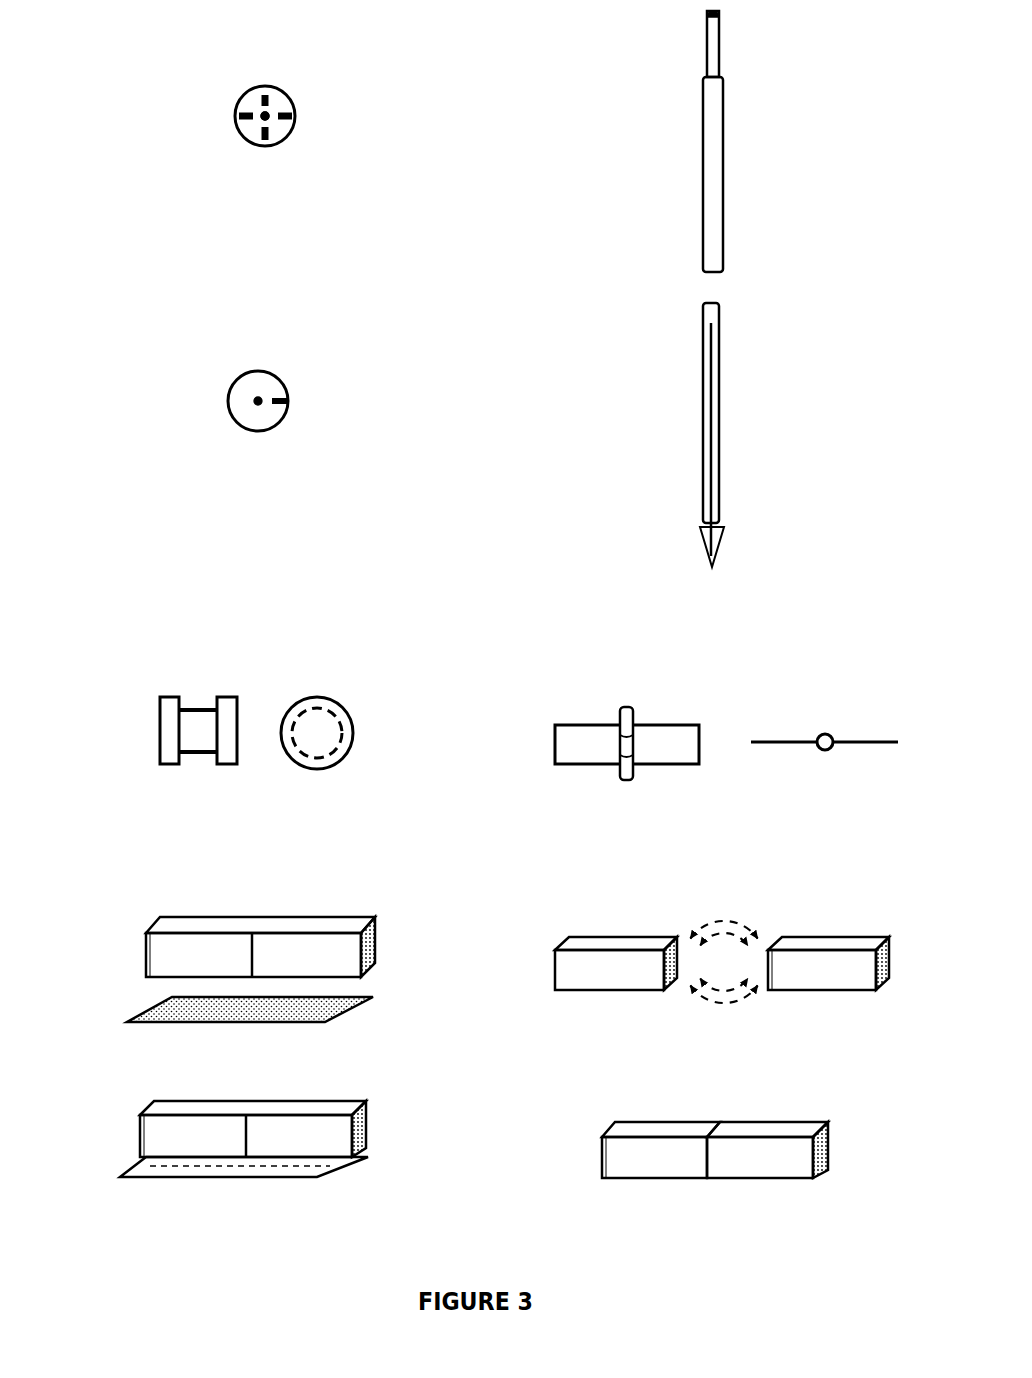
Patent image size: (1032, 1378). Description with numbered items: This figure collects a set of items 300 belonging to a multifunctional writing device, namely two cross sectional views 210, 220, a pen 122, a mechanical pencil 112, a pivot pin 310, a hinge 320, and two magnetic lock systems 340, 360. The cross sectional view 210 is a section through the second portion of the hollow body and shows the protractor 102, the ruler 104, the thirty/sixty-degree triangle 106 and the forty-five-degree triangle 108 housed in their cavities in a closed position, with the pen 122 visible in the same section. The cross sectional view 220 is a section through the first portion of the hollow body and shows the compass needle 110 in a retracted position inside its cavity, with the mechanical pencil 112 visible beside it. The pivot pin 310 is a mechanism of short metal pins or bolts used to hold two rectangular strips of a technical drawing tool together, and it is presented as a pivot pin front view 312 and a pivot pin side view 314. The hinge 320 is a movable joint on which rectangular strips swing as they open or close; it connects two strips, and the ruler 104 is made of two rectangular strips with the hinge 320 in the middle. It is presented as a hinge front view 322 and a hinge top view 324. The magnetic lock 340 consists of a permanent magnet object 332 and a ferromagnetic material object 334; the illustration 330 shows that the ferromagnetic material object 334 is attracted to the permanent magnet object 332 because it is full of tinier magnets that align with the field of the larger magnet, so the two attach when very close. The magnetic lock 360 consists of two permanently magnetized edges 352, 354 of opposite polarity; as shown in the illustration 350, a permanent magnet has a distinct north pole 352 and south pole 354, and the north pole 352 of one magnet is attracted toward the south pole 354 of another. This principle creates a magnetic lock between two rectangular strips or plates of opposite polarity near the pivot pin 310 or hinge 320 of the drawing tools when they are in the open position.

The protractor 102 is at (234, 116).
The ruler 104 is at (265, 148).
The thirty/sixty-degree triangle 106 is at (297, 116).
The forty-five-degree triangle 108 is at (265, 86).
The compass needle 110 is at (293, 401).
The mechanical pencil 112 is at (265, 412).
The pen 122 is at (275, 126).
The cross sectional view 210 is at (282, 274).
The cross sectional view 220 is at (280, 530).
The items 300 is at (125, 1232).
The pivot pin 310 is at (284, 823).
The pivot pin front view 312 is at (200, 691).
The pivot pin side view 314 is at (317, 691).
The hinge 320 is at (739, 822).
The hinge front view 322 is at (627, 692).
The hinge top view 324 is at (825, 706).
The magnetic attraction illustration 330 is at (263, 1062).
The permanent magnet object 332 is at (141, 949).
The ferromagnetic material object 334 is at (141, 1006).
The magnetic lock 340 is at (257, 1217).
The magnetic pole illustration 350 is at (741, 1040).
The north pole 352 is at (633, 936).
The south pole 354 is at (815, 936).
The magnetic lock 360 is at (726, 1219).